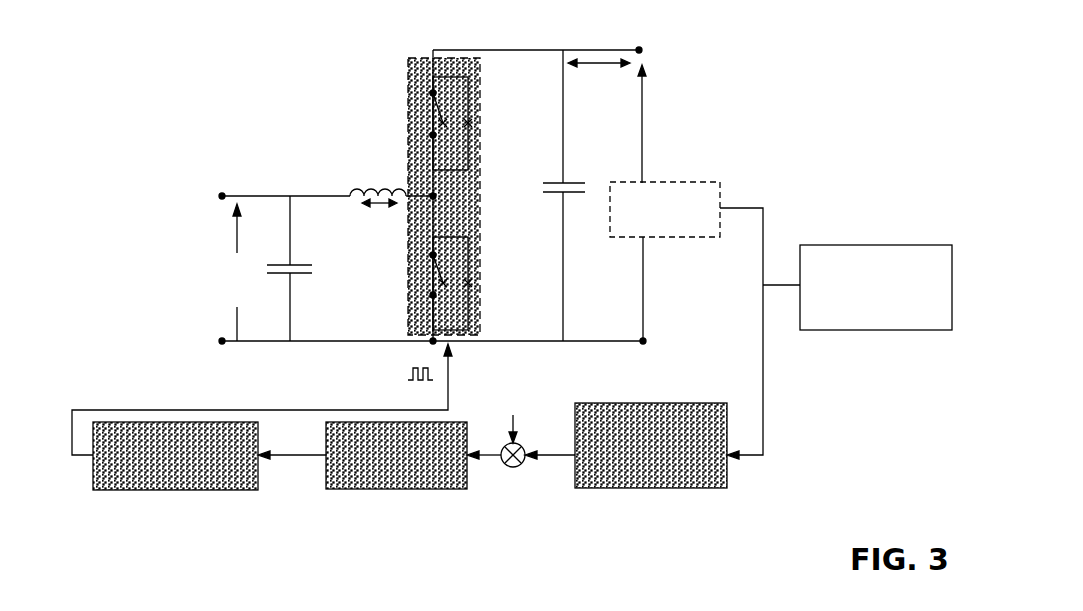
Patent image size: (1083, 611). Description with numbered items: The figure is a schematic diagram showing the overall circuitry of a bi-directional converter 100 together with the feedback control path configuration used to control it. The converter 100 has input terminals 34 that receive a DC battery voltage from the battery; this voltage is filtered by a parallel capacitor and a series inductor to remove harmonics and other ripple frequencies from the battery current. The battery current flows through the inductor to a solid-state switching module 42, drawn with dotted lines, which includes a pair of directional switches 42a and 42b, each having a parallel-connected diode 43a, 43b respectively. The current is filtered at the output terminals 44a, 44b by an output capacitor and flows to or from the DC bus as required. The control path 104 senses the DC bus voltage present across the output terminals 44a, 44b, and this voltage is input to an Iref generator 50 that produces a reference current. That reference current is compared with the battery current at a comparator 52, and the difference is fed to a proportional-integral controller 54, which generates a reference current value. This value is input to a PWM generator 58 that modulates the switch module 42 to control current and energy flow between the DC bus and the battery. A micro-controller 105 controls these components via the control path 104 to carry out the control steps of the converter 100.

The bi-directional converter 100 is at (250, 155).
The input terminals 34 is at (202, 343).
The solid-state switching module 42 is at (410, 56).
The directional switch 42a is at (422, 107).
The directional switch 42b is at (420, 282).
The parallel-connected diode 43a is at (482, 125).
The parallel-connected diode 43b is at (483, 280).
The output terminal 44a is at (641, 46).
The output terminal 44b is at (642, 345).
The Iref generator 50 is at (622, 488).
The comparator 52 is at (513, 468).
The proportional-integral (PI) controller 54 is at (373, 490).
The PWM generator 58 is at (188, 490).
The control path 104 is at (778, 398).
The micro-controller 105 is at (905, 245).